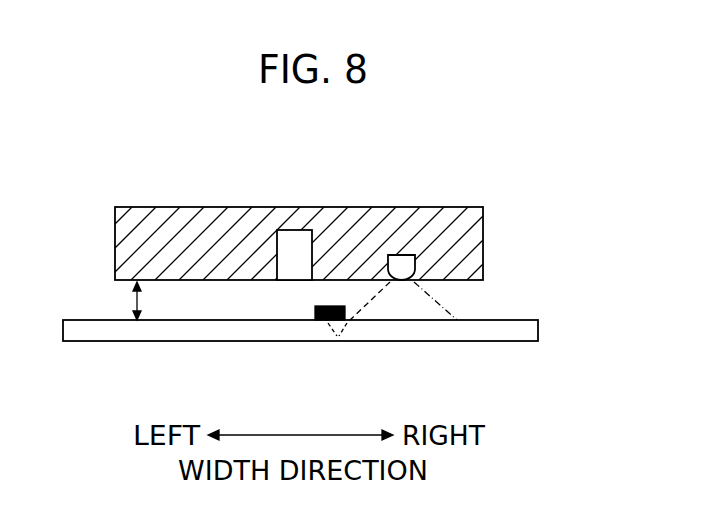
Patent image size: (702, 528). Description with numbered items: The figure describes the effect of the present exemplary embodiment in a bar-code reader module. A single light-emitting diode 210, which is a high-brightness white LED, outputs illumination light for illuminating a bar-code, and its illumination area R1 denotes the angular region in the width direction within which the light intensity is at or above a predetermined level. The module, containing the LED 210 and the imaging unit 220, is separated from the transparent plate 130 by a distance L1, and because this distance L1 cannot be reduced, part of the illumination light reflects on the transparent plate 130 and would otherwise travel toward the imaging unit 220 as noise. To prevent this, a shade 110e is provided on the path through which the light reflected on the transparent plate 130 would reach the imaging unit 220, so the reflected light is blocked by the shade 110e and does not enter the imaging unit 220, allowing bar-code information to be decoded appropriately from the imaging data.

The imaging unit 220 is at (292, 237).
The light-emitting diode 210 is at (403, 265).
The shade 110e is at (330, 306).
The illumination area R1 is at (438, 305).
The transparent plate 130 is at (470, 341).
The distance L1 is at (119, 301).